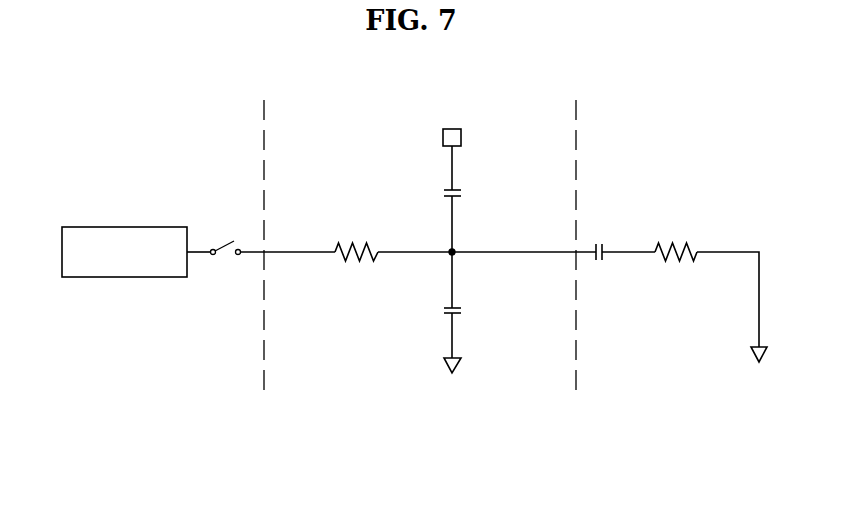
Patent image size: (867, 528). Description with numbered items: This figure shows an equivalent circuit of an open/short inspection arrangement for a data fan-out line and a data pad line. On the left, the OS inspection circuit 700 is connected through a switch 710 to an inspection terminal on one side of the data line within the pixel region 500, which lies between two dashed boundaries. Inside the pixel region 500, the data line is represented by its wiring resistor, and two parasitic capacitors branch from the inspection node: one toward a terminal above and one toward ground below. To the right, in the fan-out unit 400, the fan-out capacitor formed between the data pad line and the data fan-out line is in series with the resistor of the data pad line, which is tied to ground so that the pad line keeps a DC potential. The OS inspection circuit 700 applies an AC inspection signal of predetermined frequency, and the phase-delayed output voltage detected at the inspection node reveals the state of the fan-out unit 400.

The OS inspection circuit 700 is at (124, 252).
The switch 710 is at (226, 258).
The pixel region 500 is at (465, 267).
The fan-out unit 400 is at (675, 323).